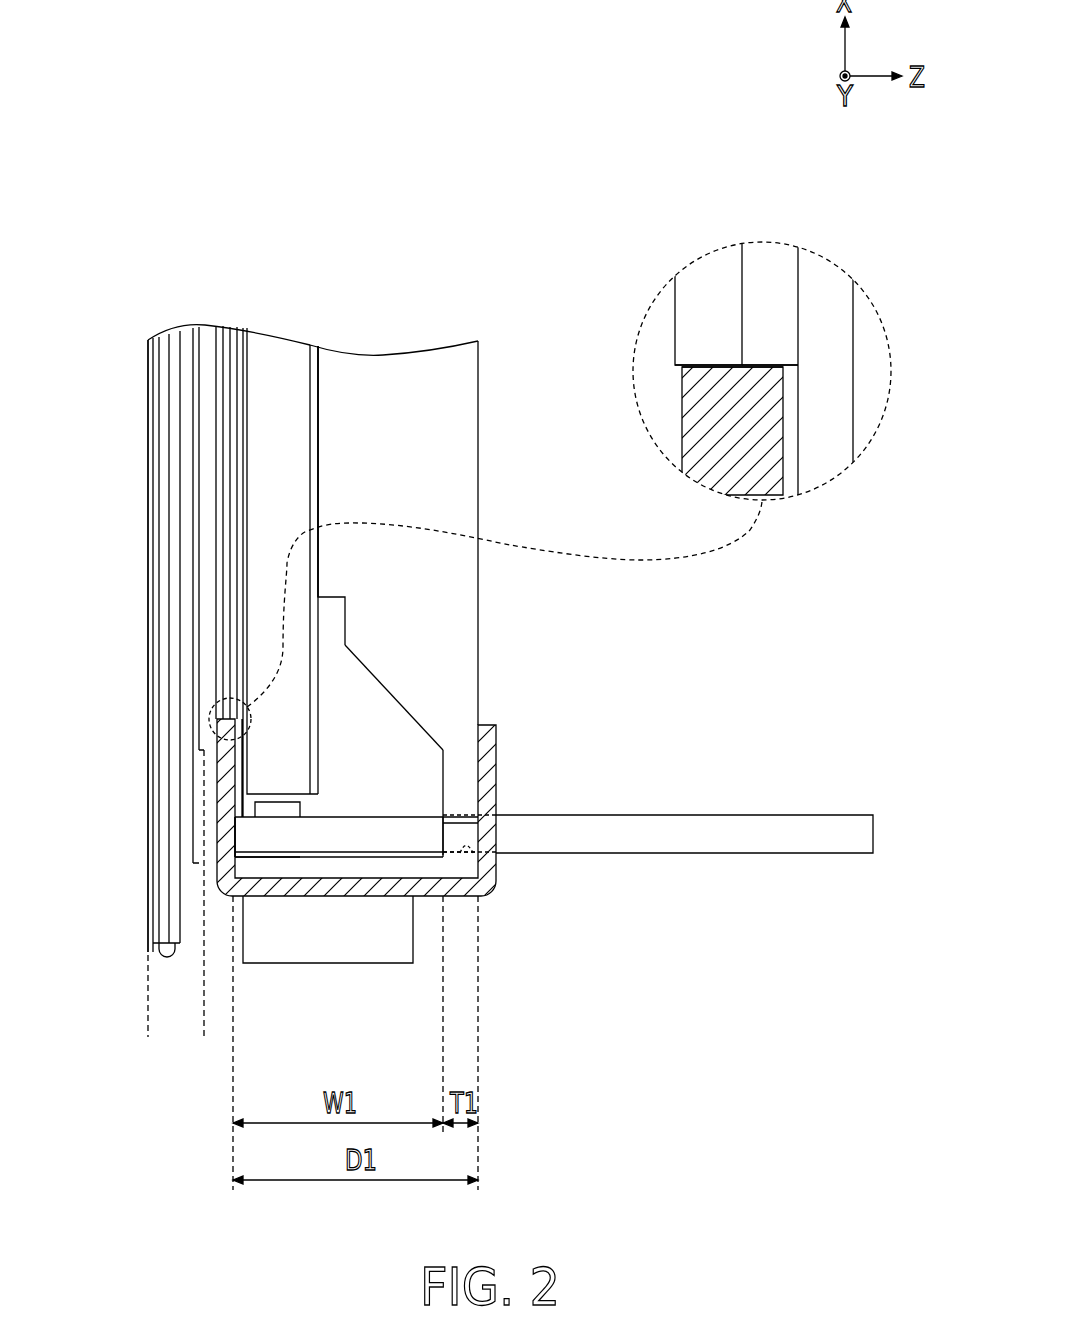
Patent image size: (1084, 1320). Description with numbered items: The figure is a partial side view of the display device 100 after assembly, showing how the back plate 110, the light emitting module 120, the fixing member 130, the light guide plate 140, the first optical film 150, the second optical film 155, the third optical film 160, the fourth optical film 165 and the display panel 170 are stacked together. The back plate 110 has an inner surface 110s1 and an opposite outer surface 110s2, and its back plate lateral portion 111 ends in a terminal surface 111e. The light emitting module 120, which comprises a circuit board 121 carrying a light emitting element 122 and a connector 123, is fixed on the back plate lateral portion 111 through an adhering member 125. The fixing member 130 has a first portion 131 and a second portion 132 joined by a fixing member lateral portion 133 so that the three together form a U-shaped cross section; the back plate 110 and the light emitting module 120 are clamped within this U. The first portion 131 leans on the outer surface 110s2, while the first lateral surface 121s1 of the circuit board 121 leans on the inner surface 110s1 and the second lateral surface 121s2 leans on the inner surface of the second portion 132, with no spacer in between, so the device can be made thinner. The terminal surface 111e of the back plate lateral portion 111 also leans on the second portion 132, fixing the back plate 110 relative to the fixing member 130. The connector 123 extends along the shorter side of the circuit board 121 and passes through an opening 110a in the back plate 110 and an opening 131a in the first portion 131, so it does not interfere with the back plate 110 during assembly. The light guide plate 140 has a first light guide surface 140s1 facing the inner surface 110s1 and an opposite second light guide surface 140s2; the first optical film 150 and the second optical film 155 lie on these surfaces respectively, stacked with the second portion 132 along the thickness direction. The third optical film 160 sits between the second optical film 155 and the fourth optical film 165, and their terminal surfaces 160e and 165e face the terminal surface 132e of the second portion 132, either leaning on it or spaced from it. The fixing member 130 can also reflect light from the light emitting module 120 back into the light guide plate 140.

The display device 100 is at (487, 167).
The back plate 110 is at (462, 490).
The inner surface 110s1 is at (425, 762).
The outer surface 110s2 is at (481, 690).
The opening 110a is at (497, 887).
The back plate lateral portion 111 is at (272, 865).
The terminal surface 111e is at (233, 869).
The light emitting module 120 is at (826, 707).
The circuit board 121 is at (377, 830).
The first lateral surface 121s1 is at (390, 865).
The second lateral surface 121s2 is at (235, 823).
The light emitting element 122 is at (293, 810).
The connector 123 is at (700, 830).
The adhering member 125 is at (400, 833).
The fixing member 130 is at (425, 1018).
The first portion 131 is at (383, 887).
The opening 131a is at (498, 835).
The second portion 132 is at (223, 877).
The terminal surface 132e is at (725, 365).
The fixing member lateral portion 133 is at (338, 888).
The light guide plate 140 is at (272, 347).
The first light guide surface 140s1 is at (310, 452).
The second light guide surface 140s2 is at (245, 454).
The first optical film 150 is at (315, 345).
The second optical film 155 is at (241, 330).
The third optical film 160 is at (229, 330).
The terminal surface 160e is at (767, 367).
The fourth optical film 165 is at (218, 330).
The terminal surface 165e is at (703, 367).
The display panel 170 is at (204, 1037).